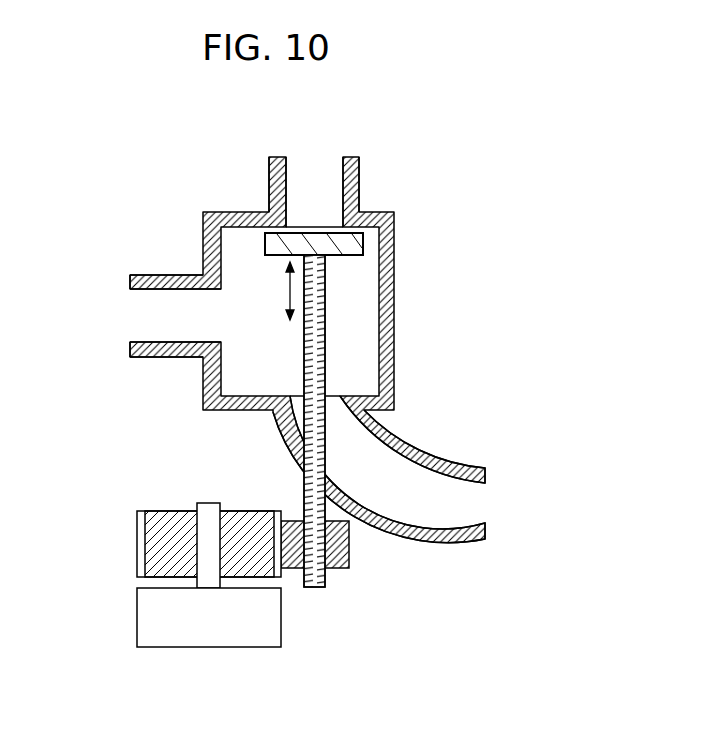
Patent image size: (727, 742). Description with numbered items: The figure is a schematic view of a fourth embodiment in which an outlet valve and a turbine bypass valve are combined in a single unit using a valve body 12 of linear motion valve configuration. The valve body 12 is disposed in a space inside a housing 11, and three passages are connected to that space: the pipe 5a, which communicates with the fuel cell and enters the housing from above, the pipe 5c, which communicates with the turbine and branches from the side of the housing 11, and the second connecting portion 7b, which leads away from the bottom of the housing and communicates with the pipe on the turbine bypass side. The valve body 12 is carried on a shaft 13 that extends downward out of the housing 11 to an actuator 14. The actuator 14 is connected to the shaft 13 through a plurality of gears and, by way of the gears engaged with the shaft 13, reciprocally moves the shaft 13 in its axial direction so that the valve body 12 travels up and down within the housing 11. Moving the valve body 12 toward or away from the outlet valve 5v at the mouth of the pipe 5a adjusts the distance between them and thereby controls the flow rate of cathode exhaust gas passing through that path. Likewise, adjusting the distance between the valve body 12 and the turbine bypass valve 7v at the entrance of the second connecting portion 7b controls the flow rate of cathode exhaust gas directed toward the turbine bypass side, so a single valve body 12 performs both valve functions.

The pipe 5a is at (306, 183).
The outlet valve 5v is at (290, 219).
The pipe 5c is at (185, 318).
The housing 11 is at (388, 320).
The valve body 12 is at (278, 247).
The shaft 13 is at (310, 496).
The turbine bypass valve 7v is at (292, 403).
The second connecting portion 7b is at (460, 506).
The actuator 14 is at (137, 617).